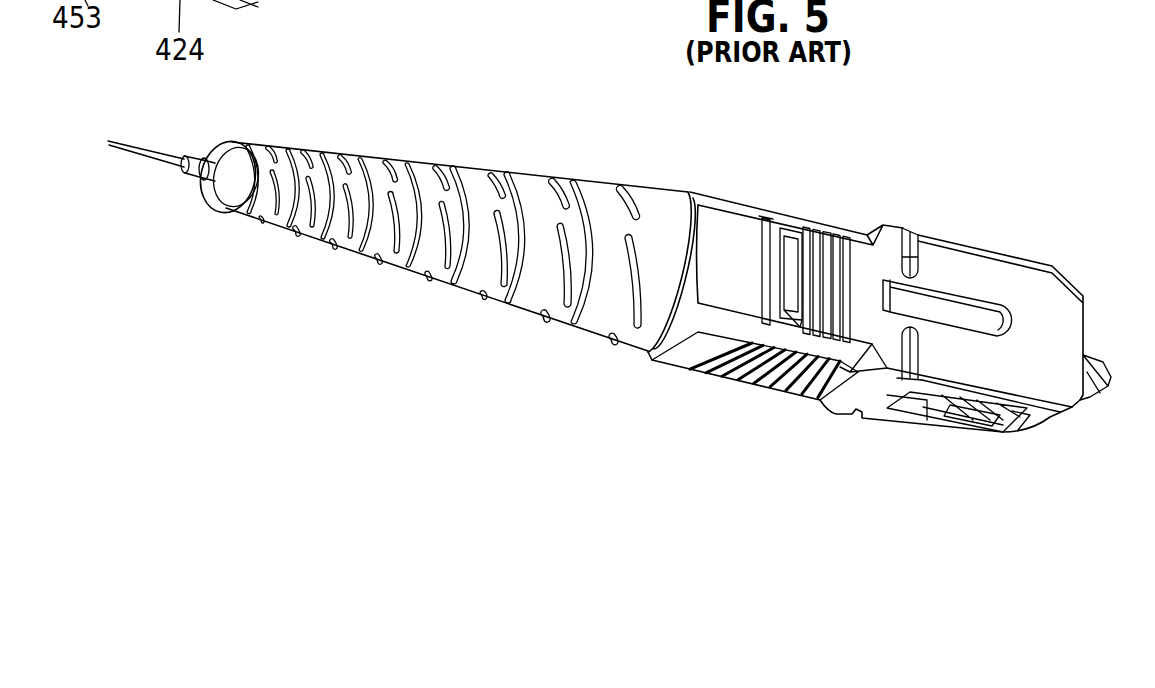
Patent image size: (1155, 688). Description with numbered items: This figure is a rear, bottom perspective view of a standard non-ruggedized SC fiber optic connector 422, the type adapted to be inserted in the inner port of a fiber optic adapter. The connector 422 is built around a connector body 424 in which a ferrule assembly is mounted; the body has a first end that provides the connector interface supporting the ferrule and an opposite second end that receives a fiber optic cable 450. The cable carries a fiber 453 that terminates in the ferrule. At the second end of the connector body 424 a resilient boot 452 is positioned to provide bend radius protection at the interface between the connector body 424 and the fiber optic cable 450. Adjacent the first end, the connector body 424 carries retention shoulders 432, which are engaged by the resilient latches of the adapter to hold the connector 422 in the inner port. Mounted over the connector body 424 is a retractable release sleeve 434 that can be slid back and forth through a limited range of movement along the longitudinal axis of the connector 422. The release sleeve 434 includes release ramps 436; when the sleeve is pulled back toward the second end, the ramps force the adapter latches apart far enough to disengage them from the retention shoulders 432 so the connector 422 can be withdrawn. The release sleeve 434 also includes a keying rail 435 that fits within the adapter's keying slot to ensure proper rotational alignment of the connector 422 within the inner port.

The fiber optic connector 422 is at (805, 198).
The connector body 424 is at (1088, 347).
The retention shoulders 432 is at (992, 415).
The retractable release sleeve 434 is at (943, 262).
The keying rail 435 is at (977, 310).
The release ramps 436 is at (967, 428).
The fiber optic cable 450 is at (231, 150).
The resilient boot 452 is at (477, 172).
The fiber 453 is at (135, 152).